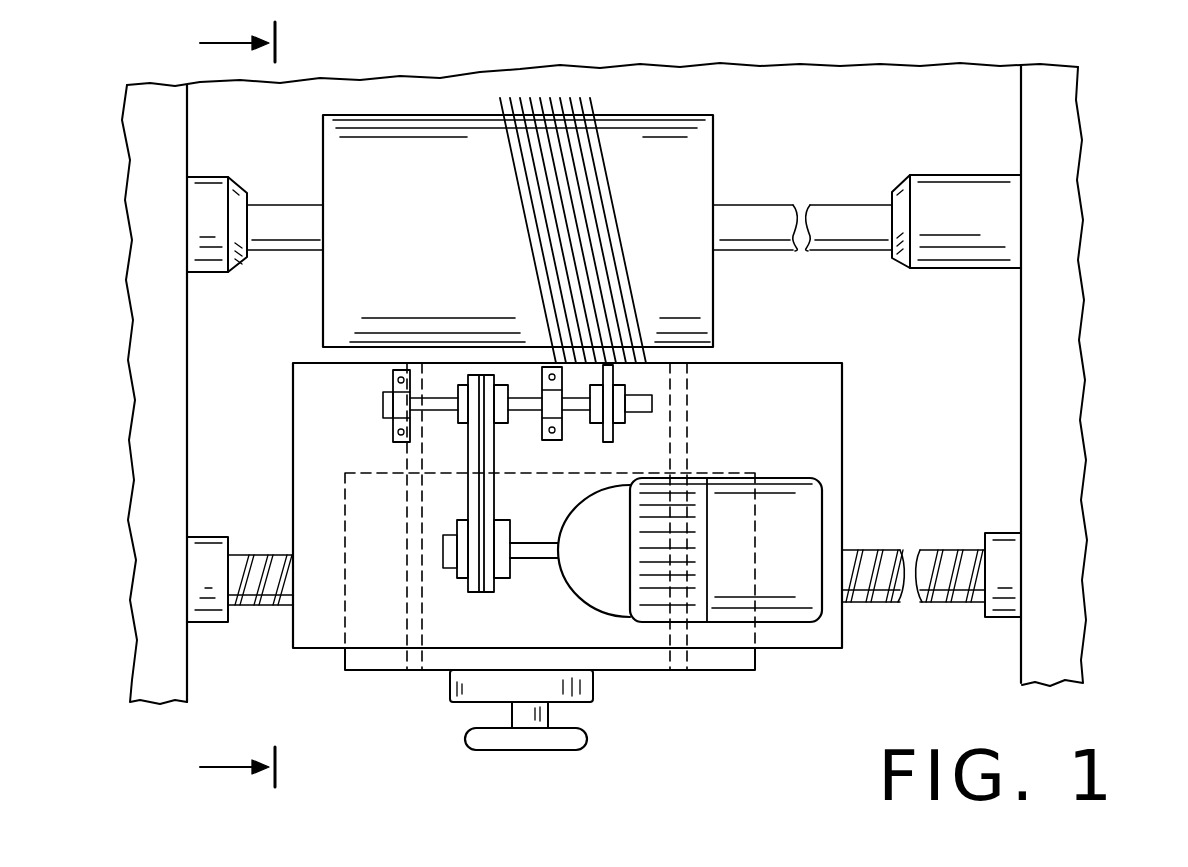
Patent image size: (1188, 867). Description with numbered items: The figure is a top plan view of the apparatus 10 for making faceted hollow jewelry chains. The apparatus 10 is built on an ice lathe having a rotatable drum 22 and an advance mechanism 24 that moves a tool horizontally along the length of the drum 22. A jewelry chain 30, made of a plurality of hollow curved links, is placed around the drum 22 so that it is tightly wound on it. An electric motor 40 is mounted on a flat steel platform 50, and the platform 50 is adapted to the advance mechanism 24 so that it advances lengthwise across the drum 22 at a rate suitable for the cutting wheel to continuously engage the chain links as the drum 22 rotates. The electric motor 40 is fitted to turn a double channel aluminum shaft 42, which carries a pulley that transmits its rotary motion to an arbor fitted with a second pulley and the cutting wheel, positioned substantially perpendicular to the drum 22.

The apparatus 10 is at (898, 431).
The rotatable drum 22 is at (690, 177).
The advance mechanism 24 is at (572, 738).
The jewelry chain 30 is at (582, 135).
The electric motor 40 is at (798, 525).
The double channel aluminum shaft 42 is at (522, 553).
The flat steel platform 50 is at (832, 392).